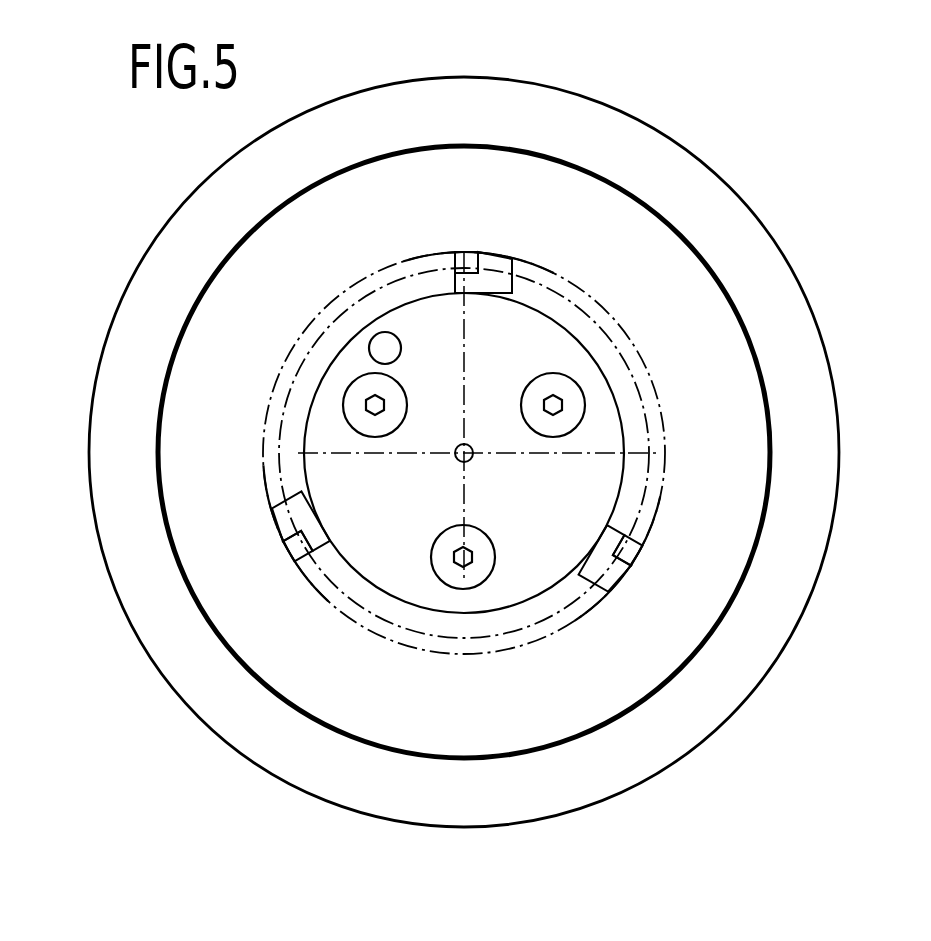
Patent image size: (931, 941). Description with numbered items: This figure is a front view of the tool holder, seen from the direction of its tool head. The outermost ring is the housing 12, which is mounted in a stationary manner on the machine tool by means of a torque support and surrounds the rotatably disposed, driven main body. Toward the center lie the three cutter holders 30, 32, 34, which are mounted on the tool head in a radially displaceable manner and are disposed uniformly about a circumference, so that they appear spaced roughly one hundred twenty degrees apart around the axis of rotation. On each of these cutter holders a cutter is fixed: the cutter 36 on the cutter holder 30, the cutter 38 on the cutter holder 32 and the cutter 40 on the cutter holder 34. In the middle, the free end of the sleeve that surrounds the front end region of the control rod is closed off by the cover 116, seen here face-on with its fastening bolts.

The housing 12 is at (658, 124).
The cutter holder 30 is at (630, 577).
The cutter holder 32 is at (497, 272).
The cutter holder 34 is at (278, 512).
The cutter 36 is at (638, 552).
The cutter 38 is at (469, 252).
The cutter 40 is at (283, 550).
The cover 116 is at (508, 578).